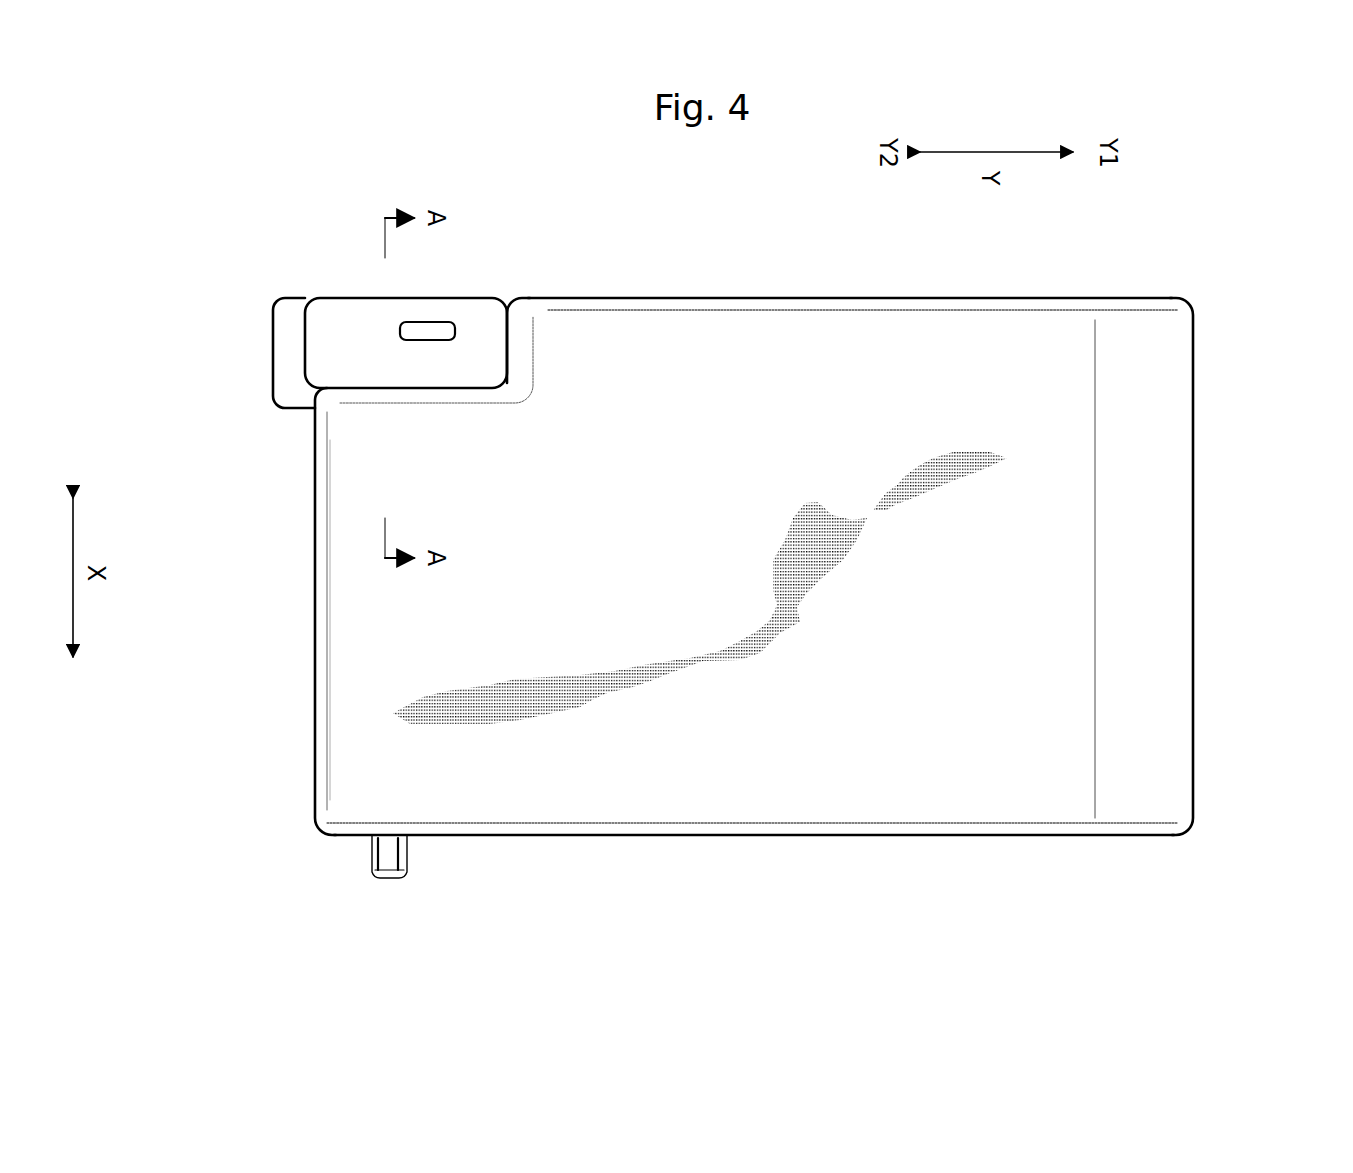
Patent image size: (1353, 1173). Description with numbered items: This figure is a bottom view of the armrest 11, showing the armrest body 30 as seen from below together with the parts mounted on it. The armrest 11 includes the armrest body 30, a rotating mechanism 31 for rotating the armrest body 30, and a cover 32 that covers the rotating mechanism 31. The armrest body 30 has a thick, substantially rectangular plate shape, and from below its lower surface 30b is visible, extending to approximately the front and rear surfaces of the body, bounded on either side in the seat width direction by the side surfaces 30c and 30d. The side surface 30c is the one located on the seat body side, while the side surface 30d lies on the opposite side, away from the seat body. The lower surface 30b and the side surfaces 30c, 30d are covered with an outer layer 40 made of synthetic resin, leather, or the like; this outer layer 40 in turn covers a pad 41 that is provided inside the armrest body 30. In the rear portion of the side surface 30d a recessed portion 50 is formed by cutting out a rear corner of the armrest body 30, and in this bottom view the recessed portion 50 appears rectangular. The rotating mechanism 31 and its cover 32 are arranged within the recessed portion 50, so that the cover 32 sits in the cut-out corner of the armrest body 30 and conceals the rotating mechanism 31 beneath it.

The armrest 11 is at (1218, 765).
The armrest body 30 is at (834, 852).
The lower surface 30b is at (594, 790).
The side surface 30c is at (727, 836).
The side surface 30d is at (697, 297).
The rotating mechanism 31 is at (490, 300).
The cover 32 is at (432, 297).
The outer layer 40 is at (365, 513).
The pad 41 is at (365, 672).
The recessed portion 50 is at (355, 374).